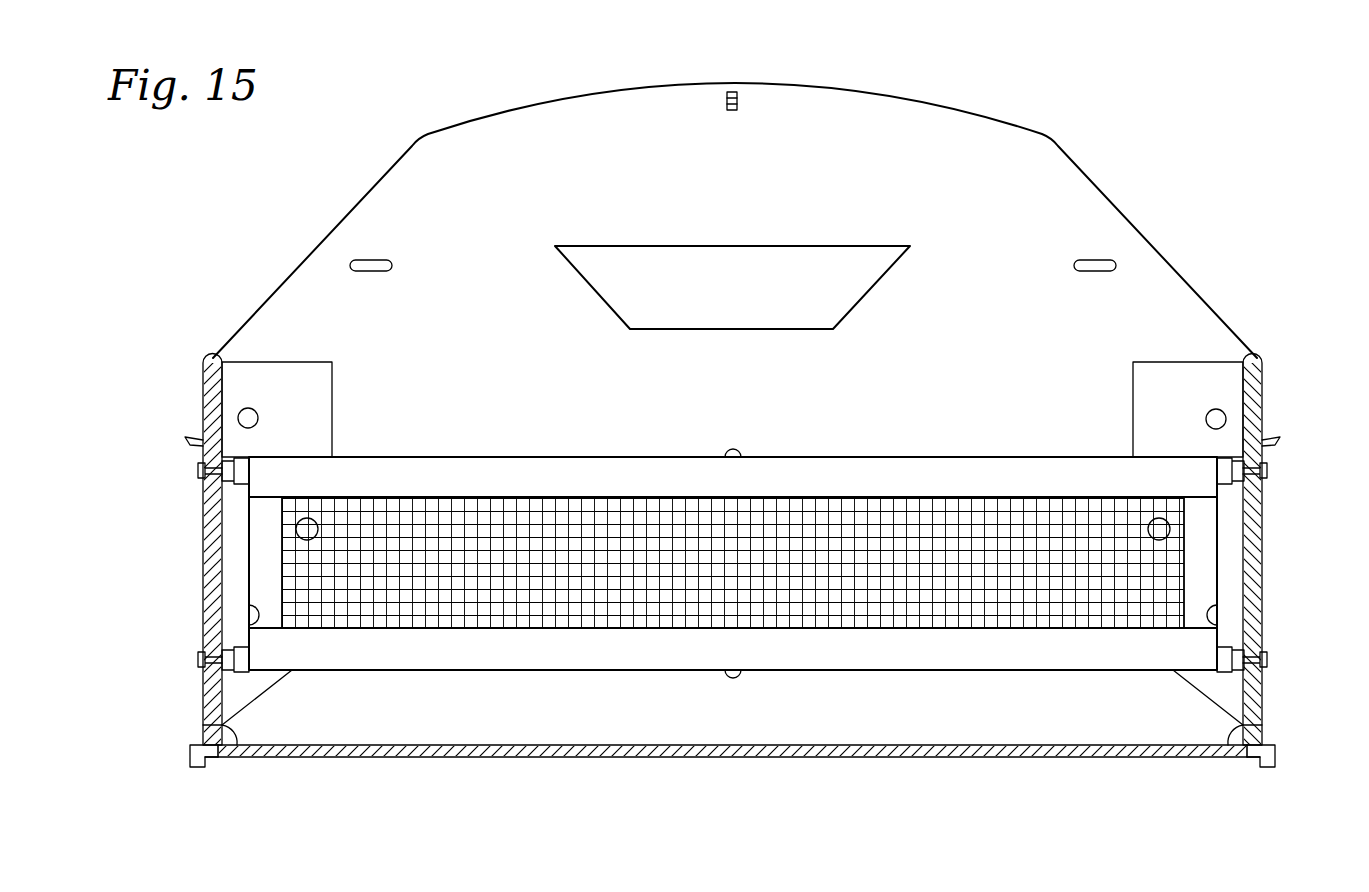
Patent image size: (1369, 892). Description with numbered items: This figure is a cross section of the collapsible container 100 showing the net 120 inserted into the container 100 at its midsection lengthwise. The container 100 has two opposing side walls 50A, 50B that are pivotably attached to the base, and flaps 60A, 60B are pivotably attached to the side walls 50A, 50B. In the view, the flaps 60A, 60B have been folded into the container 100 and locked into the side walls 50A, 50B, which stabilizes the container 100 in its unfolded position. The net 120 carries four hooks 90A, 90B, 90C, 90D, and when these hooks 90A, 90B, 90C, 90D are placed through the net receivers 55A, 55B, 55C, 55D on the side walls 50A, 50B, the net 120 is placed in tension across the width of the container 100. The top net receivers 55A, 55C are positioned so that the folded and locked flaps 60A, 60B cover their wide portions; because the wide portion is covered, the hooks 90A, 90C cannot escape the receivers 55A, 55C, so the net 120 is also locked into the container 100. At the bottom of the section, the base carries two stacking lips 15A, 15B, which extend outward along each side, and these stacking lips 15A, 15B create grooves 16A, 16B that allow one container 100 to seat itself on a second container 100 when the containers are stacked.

The collapsible container 100 is at (1197, 101).
The stacking lip 15A is at (192, 750).
The stacking lip 15B is at (1276, 750).
The groove 16A is at (208, 760).
The groove 16B is at (1258, 760).
The side wall 50A is at (205, 553).
The side wall 50B is at (1260, 553).
The top net receiver 55A is at (200, 468).
The net receiver 55B is at (200, 660).
The top net receiver 55C is at (1265, 468).
The net receiver 55D is at (1265, 660).
The flap 60A is at (216, 398).
The flap 60B is at (1249, 398).
The hook 90A is at (240, 462).
The hook 90B is at (248, 672).
The hook 90C is at (1226, 462).
The hook 90D is at (1218, 672).
The net 120 is at (897, 457).